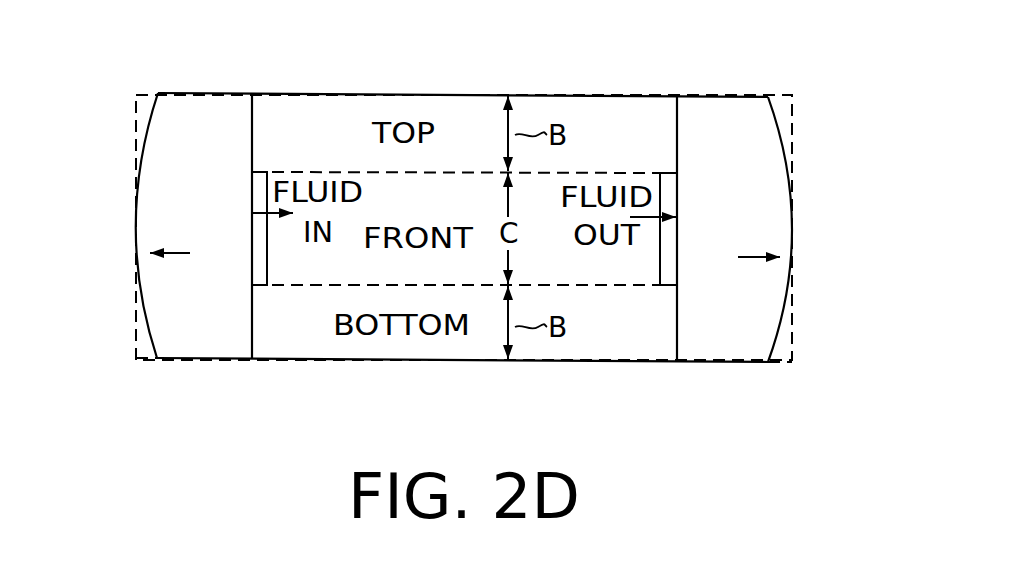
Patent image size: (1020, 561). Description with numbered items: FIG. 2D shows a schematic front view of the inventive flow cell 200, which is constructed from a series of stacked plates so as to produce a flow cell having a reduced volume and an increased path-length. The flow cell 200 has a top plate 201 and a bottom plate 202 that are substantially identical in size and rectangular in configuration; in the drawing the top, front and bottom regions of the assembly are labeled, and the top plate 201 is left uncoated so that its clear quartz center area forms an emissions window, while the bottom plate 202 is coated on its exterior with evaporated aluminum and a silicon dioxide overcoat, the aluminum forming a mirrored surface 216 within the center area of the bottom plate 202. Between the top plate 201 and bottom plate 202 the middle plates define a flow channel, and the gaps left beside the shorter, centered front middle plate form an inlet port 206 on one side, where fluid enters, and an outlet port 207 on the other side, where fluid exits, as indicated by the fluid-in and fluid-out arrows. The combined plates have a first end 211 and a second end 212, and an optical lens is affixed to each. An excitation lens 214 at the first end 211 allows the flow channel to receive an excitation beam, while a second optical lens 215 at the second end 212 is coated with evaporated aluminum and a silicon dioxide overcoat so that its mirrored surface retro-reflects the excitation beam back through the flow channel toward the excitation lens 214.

The flow cell 200 is at (792, 160).
The top plate 201 is at (331, 108).
The bottom plate 202 is at (303, 343).
The inlet port 206 is at (252, 187).
The outlet port 207 is at (677, 192).
The first end 211 is at (157, 358).
The second end 212 is at (768, 362).
The excitation lens 214 is at (170, 305).
The second optical lens 215 is at (762, 263).
The mirrored surface 216 is at (452, 345).